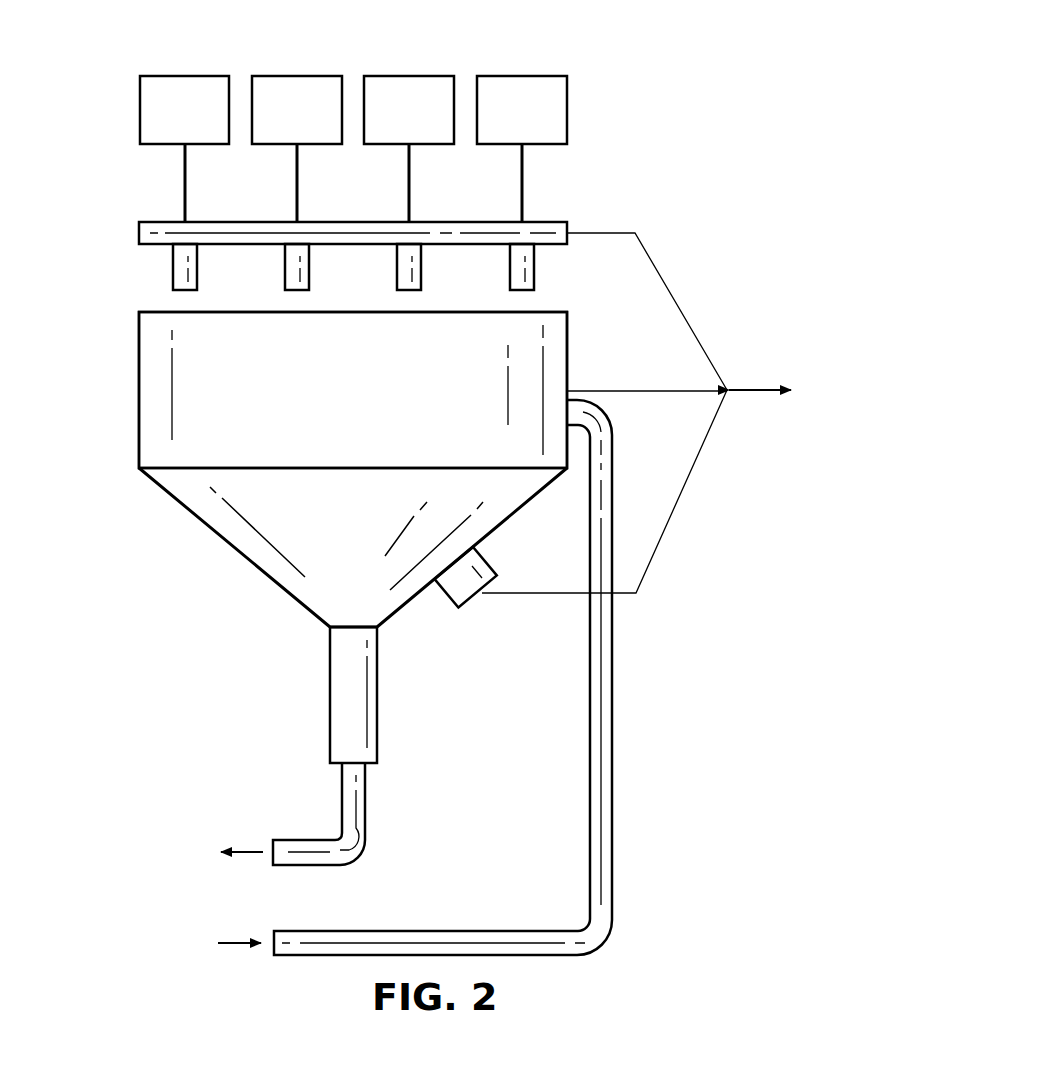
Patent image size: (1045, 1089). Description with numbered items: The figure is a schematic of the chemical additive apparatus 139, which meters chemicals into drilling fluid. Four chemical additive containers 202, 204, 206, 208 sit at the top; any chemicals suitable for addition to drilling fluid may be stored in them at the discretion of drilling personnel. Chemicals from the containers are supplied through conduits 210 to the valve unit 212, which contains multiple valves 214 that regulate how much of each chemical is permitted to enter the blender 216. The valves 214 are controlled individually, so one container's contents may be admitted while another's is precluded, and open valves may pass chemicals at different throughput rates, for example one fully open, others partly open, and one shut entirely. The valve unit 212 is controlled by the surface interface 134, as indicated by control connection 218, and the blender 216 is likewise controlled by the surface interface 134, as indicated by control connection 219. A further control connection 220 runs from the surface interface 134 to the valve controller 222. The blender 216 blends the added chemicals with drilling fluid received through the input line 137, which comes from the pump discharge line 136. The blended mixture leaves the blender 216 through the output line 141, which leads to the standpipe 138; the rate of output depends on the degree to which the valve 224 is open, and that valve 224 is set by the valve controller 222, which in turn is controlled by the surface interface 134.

The chemical additive apparatus 139 is at (636, 76).
The chemical additive container 202 is at (184, 110).
The chemical additive container 204 is at (297, 110).
The chemical additive container 206 is at (409, 110).
The chemical additive container 208 is at (522, 110).
The conduits 210 is at (183, 182).
The valve unit 212 is at (138, 232).
The valves 214 is at (171, 268).
The blender 216 is at (353, 469).
The control connection to valve unit 218 is at (681, 315).
The control connection to blender 219 is at (641, 389).
The control line 220 is at (683, 491).
The valve controller 222 is at (463, 610).
The valve 224 is at (329, 695).
The output line 141 is at (302, 838).
The input line 137 is at (613, 678).
The surface interface 134 is at (819, 391).
The standpipe 138 is at (163, 853).
The pump discharge line 136 is at (175, 943).